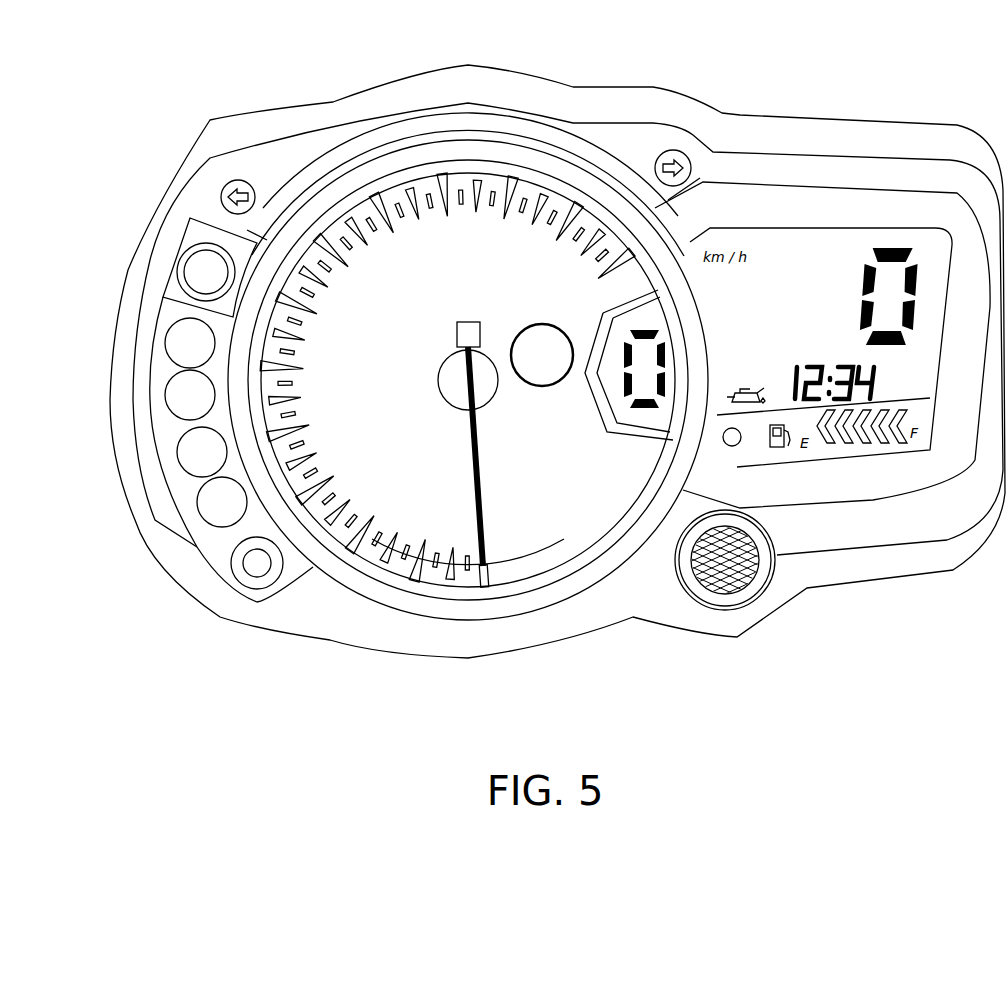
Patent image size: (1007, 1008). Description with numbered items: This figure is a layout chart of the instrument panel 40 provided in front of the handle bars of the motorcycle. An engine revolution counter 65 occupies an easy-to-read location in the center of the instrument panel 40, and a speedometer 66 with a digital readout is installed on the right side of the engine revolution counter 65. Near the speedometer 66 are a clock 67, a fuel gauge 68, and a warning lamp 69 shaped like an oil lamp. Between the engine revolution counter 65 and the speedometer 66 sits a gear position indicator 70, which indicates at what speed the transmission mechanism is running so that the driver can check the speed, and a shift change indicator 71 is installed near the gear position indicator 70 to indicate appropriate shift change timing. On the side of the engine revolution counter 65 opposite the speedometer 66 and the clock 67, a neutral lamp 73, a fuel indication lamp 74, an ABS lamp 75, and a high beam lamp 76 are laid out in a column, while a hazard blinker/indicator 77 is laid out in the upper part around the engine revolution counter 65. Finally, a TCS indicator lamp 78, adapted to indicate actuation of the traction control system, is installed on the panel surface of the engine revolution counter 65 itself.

The instrument panel 40 is at (724, 114).
The engine revolution counter 65 is at (417, 497).
The speedometer 66 is at (893, 275).
The clock 67 is at (867, 445).
The fuel gauge 68 is at (779, 449).
The warning lamp 69 is at (733, 447).
The gear position indicator 70 is at (642, 416).
The shift change indicator 71 is at (725, 580).
The neutral lamp 73 is at (166, 334).
The fuel indication lamp 74 is at (166, 392).
The ABS lamp 75 is at (178, 447).
The high beam lamp 76 is at (198, 500).
The hazard blinker/indicator 77 is at (240, 180).
The TCS indicator lamp 78 is at (542, 387).